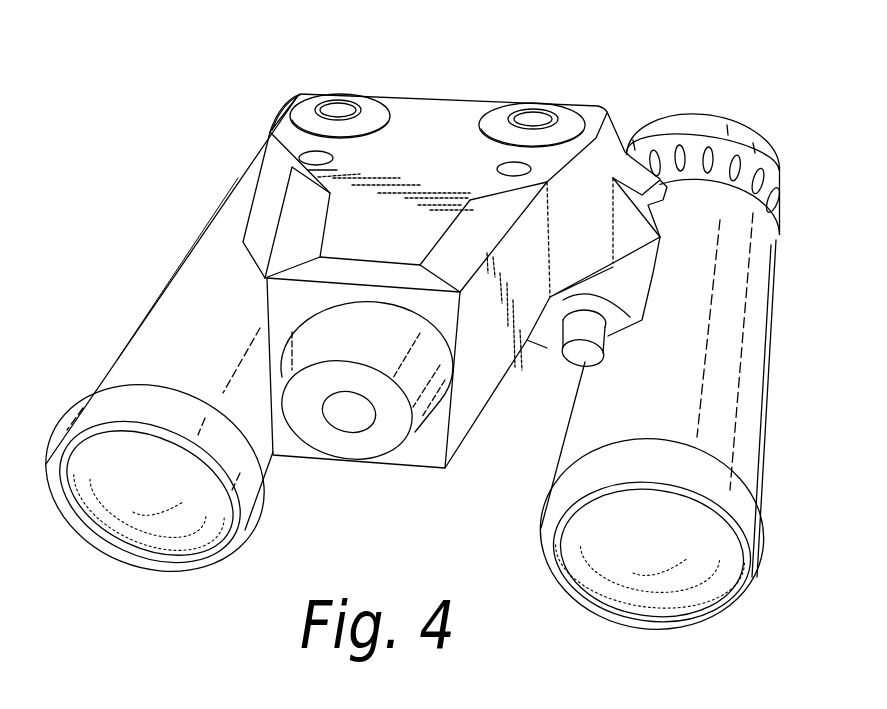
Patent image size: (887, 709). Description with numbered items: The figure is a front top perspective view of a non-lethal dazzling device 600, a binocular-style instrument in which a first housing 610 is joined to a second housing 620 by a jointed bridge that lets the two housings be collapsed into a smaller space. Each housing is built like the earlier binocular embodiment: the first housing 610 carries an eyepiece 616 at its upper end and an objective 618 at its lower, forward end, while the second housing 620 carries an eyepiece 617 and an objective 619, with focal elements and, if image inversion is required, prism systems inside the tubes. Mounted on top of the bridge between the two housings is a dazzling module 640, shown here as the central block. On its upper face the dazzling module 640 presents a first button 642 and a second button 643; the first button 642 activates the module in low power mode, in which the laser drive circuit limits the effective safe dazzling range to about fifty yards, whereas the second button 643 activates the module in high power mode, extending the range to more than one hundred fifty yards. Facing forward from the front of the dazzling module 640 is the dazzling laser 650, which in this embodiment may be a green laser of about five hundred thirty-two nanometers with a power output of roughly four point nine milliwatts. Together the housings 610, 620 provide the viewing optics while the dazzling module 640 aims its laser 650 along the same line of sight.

The non-lethal dazzling device 600 is at (205, 126).
The first housing 610 is at (752, 313).
The eyepiece 616 is at (763, 158).
The eyepiece 617 is at (270, 130).
The objective 618 is at (614, 596).
The objective 619 is at (134, 540).
The second housing 620 is at (162, 280).
The dazzling module 640 is at (433, 103).
The first button 642 is at (538, 110).
The second button 643 is at (347, 105).
The dazzling laser 650 is at (367, 442).